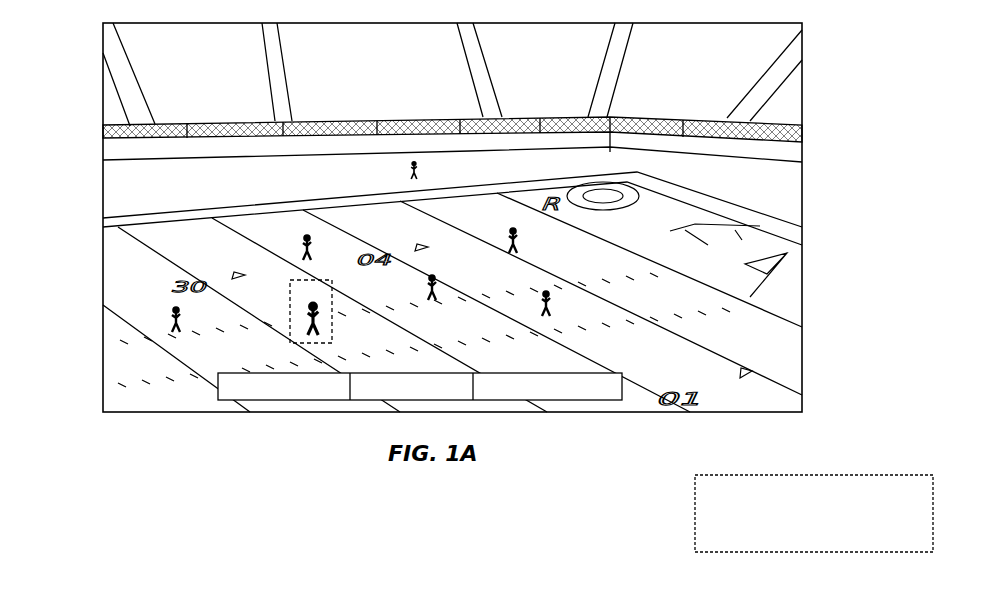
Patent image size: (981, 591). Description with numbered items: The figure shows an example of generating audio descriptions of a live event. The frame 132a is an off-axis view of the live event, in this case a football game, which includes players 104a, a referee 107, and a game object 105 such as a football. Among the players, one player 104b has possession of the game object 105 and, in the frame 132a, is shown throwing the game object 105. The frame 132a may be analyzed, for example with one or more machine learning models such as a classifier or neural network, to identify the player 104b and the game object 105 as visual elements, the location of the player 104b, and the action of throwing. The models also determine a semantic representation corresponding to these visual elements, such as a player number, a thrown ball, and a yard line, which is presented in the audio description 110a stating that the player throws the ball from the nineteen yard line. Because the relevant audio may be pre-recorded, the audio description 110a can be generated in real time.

The players 104a is at (280, 240).
The player 104b is at (283, 360).
The game object 105 is at (185, 428).
The referee 107 is at (378, 168).
The frame 132a is at (263, 413).
The audio description 110a is at (757, 475).